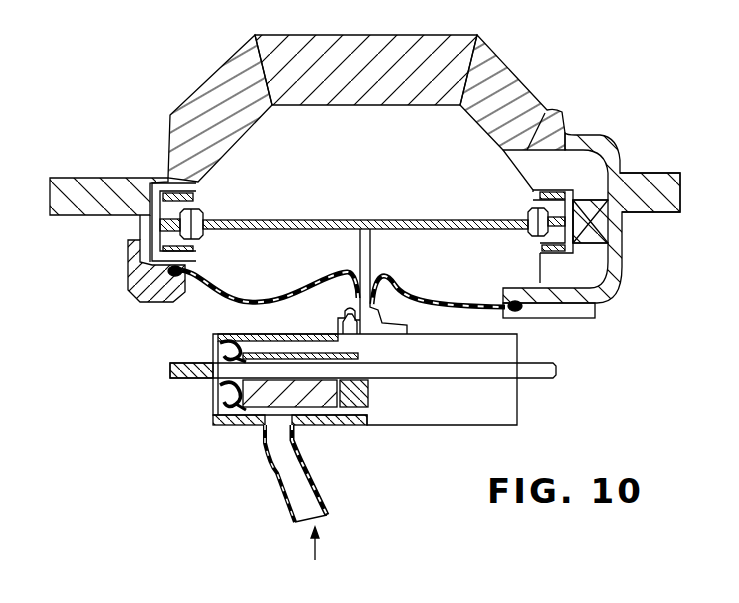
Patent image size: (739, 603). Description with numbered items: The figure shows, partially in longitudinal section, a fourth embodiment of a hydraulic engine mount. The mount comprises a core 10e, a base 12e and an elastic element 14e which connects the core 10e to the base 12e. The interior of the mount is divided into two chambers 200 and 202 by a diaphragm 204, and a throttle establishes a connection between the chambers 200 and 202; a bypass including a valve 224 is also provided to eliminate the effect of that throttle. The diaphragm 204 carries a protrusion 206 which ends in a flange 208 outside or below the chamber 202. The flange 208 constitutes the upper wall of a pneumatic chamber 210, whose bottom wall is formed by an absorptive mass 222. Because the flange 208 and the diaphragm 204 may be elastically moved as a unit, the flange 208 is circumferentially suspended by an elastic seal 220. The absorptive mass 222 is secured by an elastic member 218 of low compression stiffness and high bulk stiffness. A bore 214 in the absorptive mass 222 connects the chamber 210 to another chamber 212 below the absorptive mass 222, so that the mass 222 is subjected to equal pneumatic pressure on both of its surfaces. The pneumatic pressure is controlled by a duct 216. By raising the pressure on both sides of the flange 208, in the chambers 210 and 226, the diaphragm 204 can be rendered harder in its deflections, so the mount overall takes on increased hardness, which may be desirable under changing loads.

The core 10e is at (418, 48).
The elastic element 14e is at (507, 95).
The base 12e is at (628, 174).
The chamber 200 is at (433, 161).
The chamber 202 is at (281, 276).
The diaphragm 204 is at (272, 219).
The protrusion 206 is at (372, 268).
The flange 208 is at (295, 352).
The pneumatic chamber 210 is at (273, 369).
The chamber 212 is at (265, 413).
The bore 214 is at (352, 401).
The duct 216 is at (312, 512).
The elastic member 218 is at (214, 405).
The elastic seal 220 is at (213, 331).
The absorptive mass 222 is at (320, 410).
The valve 224 is at (613, 231).
The chamber 226 is at (253, 333).